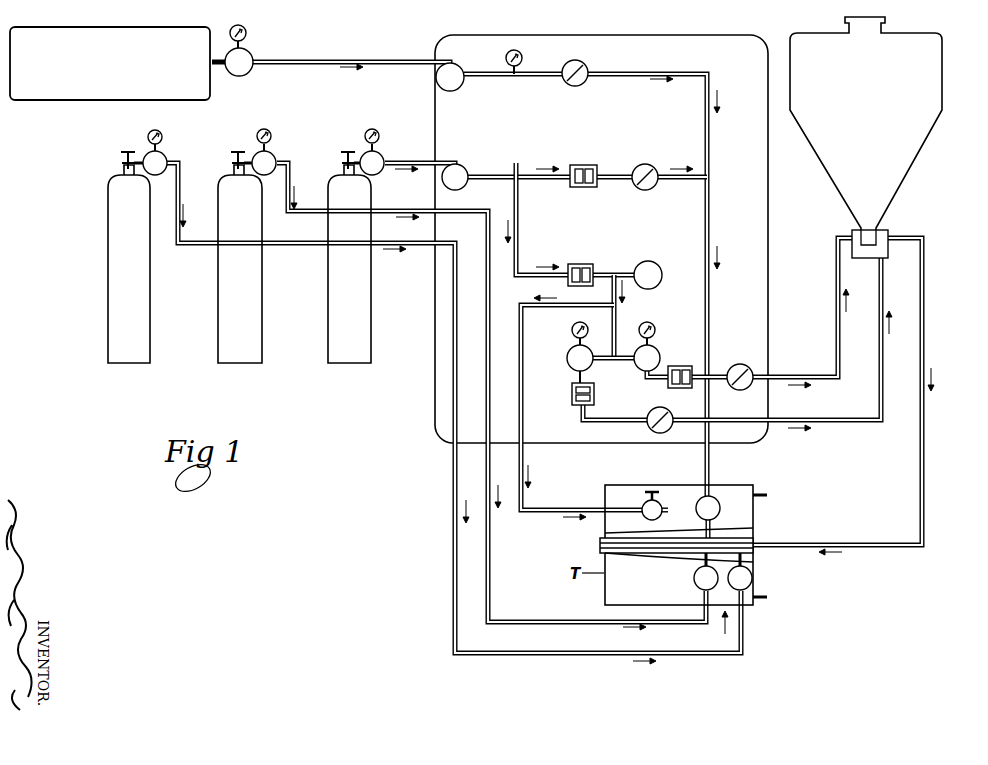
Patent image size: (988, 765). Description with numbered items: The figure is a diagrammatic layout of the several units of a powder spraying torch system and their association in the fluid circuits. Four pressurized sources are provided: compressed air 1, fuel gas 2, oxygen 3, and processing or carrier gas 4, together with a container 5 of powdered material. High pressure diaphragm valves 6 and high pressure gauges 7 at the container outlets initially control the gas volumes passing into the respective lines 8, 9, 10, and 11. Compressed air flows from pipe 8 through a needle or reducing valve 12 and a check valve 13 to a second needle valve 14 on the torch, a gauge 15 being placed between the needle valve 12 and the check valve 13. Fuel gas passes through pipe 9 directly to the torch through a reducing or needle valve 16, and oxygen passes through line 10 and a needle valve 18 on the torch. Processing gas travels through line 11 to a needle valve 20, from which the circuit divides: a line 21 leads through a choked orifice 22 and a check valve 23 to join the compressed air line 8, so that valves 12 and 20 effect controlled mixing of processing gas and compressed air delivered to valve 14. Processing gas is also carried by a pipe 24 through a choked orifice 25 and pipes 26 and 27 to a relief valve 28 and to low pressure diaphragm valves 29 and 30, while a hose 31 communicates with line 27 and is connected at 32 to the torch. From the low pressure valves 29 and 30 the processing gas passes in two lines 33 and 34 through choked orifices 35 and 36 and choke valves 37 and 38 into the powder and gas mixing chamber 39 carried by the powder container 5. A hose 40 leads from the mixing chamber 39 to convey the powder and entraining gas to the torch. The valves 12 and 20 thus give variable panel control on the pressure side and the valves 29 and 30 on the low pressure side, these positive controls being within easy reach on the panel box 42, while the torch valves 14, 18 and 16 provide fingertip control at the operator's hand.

The source of compressed air 1 is at (124, 31).
The source of fuel gas 2 is at (107, 222).
The source of oxygen 3 is at (218, 263).
The source of processing or carrier gas 4 is at (328, 263).
The powdered material container 5 is at (932, 60).
The high pressure diaphragm valve 6 is at (249, 58).
The high pressure gauge 7 is at (245, 30).
The compressed air line 8 is at (360, 61).
The fuel gas pipe 9 is at (186, 240).
The oxygen line 10 is at (295, 210).
The processing gas line 11 is at (405, 161).
The needle or reducing valve 12 is at (460, 88).
The check valve 13 is at (587, 66).
The second needle valve 14 is at (718, 499).
The gauge 15 is at (517, 50).
The reducing or needle valve 16 is at (753, 576).
The needle valve 18 is at (694, 579).
The needle valve 20 is at (465, 168).
The processing gas line 21 is at (556, 180).
The choked orifice 22 is at (588, 165).
The check valve 23 is at (656, 169).
The pipe 24 is at (521, 246).
The choked orifice 25 is at (578, 264).
The pipe 26 is at (622, 273).
The pipe 27 is at (619, 330).
The relief valve 28 is at (662, 271).
The low pressure diaphragm valve 29 is at (567, 359).
The low pressure diaphragm valve 30 is at (660, 350).
The hose 31 is at (523, 428).
The torch connection 32 is at (662, 516).
The processing gas line 33 is at (786, 376).
The processing gas line 34 is at (785, 419).
The choked orifice 35 is at (668, 383).
The choked orifice 36 is at (572, 395).
The choke valve 37 is at (747, 364).
The choke valve 38 is at (648, 426).
The powder and gas mixing chamber 39 is at (880, 243).
The hose 40 is at (924, 335).
The panel box 42 is at (760, 263).